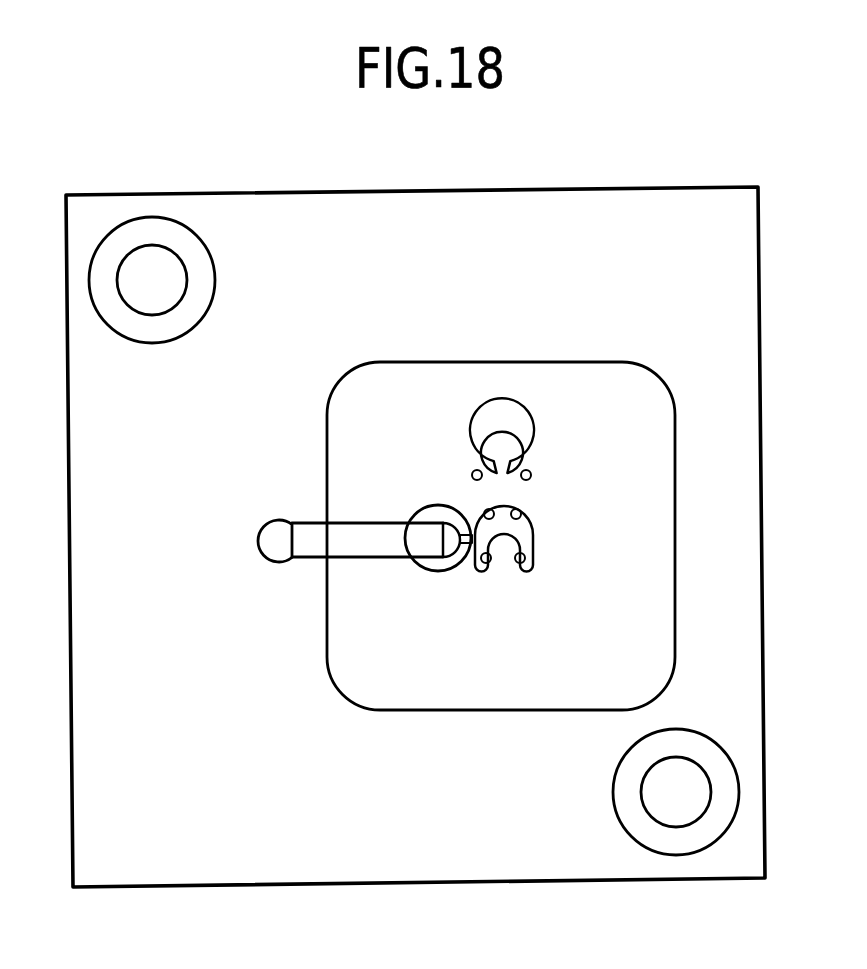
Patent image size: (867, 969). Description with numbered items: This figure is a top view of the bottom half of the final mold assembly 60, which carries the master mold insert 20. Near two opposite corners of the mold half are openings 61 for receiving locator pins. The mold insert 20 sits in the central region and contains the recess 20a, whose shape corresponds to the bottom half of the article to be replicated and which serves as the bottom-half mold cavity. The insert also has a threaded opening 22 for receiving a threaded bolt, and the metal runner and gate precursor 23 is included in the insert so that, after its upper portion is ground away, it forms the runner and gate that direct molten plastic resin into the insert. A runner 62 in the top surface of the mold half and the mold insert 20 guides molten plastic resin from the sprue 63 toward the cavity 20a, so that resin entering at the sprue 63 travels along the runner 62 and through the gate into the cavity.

The base plate 60 is at (781, 353).
The openings 61 is at (159, 241).
The master mold insert 20 is at (452, 378).
The recess 20a is at (538, 468).
The threaded openings 22 is at (435, 512).
The metal runner and gate precursor 23 is at (430, 543).
The runner 62 is at (353, 548).
The sprue 63 is at (307, 535).